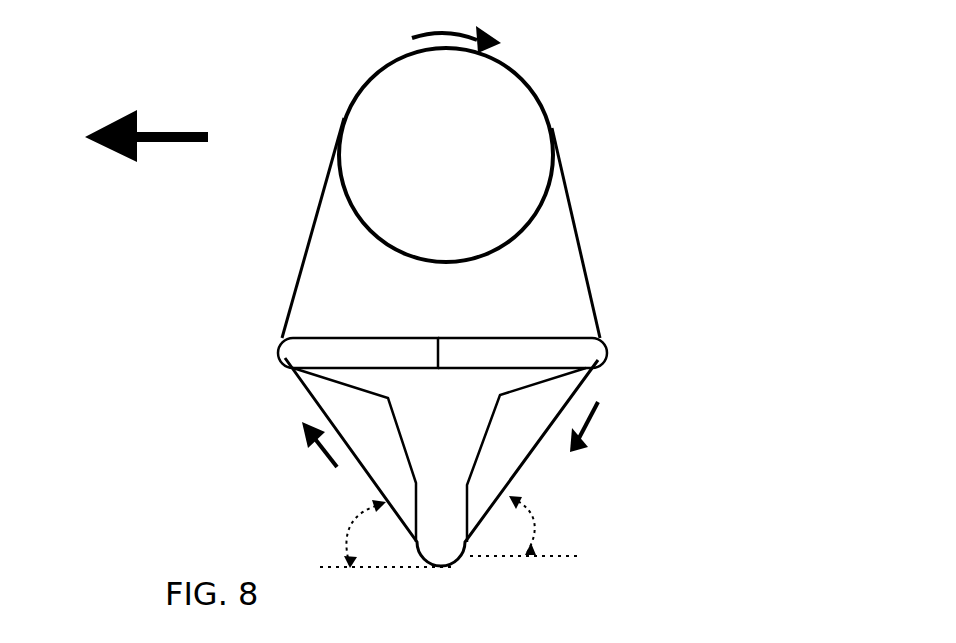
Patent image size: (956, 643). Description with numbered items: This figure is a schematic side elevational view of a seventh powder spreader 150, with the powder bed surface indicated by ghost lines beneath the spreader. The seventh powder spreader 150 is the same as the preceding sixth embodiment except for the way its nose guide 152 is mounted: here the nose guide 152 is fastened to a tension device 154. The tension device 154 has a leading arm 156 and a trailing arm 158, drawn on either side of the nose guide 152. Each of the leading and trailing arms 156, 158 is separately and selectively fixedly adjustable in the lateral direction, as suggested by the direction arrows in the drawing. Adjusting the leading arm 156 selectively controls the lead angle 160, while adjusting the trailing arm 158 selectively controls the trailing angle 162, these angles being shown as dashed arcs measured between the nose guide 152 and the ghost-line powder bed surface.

The seventh powder spreader 150 is at (706, 151).
The nose guide 152 is at (370, 384).
The tension device 154 is at (585, 365).
The leading arm 156 is at (325, 343).
The trailing arm 158 is at (540, 348).
The lead angle 160 is at (345, 533).
The trailing angle 162 is at (533, 517).